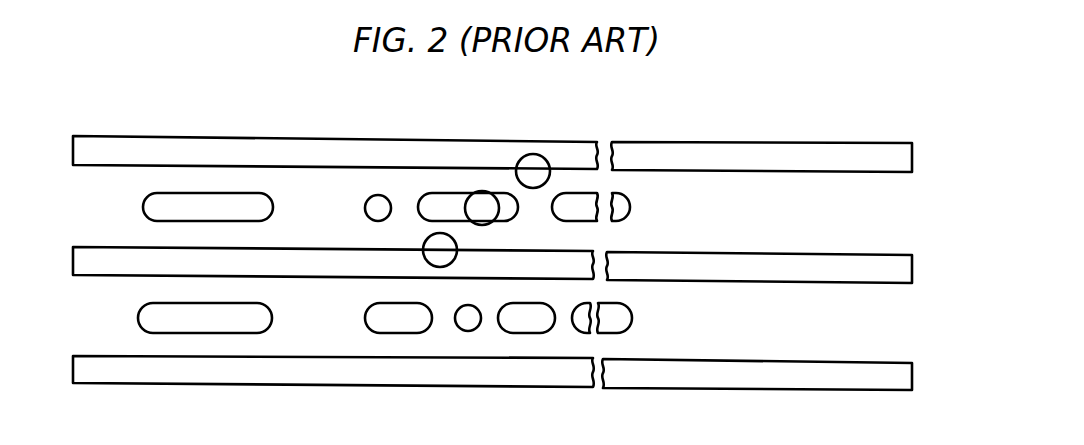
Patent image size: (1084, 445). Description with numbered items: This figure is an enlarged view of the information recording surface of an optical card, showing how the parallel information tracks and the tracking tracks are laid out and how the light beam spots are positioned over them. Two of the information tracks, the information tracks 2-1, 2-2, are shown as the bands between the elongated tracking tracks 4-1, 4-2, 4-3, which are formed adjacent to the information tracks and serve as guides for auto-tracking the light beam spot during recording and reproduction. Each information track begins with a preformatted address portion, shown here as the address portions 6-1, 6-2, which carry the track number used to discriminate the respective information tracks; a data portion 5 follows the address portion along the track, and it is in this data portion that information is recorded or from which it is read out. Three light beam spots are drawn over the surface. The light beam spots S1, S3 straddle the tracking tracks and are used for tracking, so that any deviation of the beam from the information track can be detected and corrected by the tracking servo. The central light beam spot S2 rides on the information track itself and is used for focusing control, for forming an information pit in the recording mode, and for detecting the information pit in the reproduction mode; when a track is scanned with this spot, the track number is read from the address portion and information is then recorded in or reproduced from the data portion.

The information track 2-1 is at (890, 298).
The information track 2-2 is at (890, 180).
The tracking track 4-1 is at (885, 373).
The tracking track 4-2 is at (885, 265).
The tracking track 4-3 is at (898, 152).
The data portion 5 is at (370, 317).
The address portion 6-1 is at (150, 312).
The address portion 6-2 is at (262, 200).
The light beam spot S1 is at (430, 241).
The light beam spot S2 is at (480, 200).
The light beam spot S3 is at (532, 160).